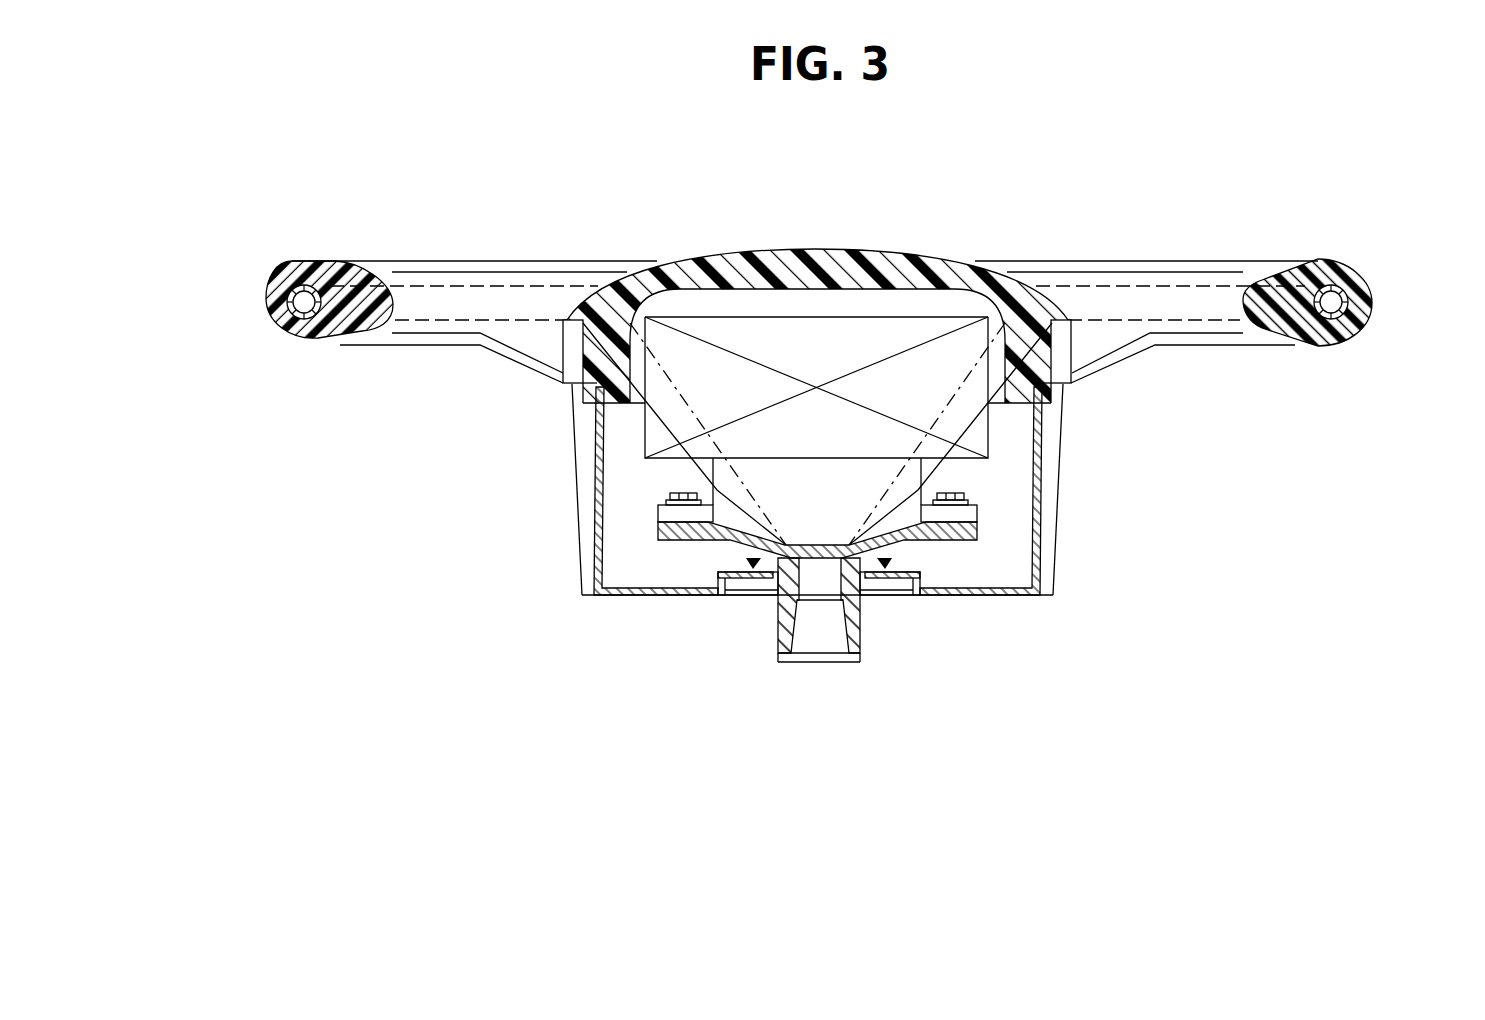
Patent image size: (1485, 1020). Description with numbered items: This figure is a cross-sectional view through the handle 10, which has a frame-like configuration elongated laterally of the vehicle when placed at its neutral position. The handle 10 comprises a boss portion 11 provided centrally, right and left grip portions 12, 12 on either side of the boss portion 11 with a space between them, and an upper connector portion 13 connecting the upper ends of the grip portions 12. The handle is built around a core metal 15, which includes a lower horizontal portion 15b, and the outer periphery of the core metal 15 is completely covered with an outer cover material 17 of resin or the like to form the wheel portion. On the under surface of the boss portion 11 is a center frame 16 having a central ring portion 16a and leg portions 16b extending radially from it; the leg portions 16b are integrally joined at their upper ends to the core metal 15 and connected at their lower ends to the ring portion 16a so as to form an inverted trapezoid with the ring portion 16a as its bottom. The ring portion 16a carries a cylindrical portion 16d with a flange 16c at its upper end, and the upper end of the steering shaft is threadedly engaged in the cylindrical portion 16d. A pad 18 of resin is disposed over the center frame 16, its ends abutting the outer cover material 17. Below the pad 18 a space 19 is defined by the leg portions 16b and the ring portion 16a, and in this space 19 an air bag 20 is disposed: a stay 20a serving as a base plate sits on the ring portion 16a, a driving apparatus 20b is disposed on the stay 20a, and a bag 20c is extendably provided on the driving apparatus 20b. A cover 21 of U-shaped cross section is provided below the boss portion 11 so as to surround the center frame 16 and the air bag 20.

The handle 10 is at (1130, 205).
The boss portion 11 is at (812, 249).
The grip portions 12 is at (285, 340).
The upper connector portion 13 is at (512, 258).
The core metal 15 is at (1367, 292).
The lower horizontal portion 15b is at (1170, 295).
The center frame 16 is at (690, 468).
The ring portion 16a is at (772, 565).
The leg portions 16b is at (690, 383).
The flange 16c is at (868, 575).
The cylindrical portion 16d is at (778, 622).
The outer cover material 17 is at (1338, 266).
The pad 18 is at (890, 262).
The space 19 is at (750, 313).
The air bag 20 is at (645, 388).
The stay 20a is at (935, 547).
The driving apparatus 20b is at (870, 487).
The bag 20c is at (900, 340).
The cover 21 is at (1033, 553).